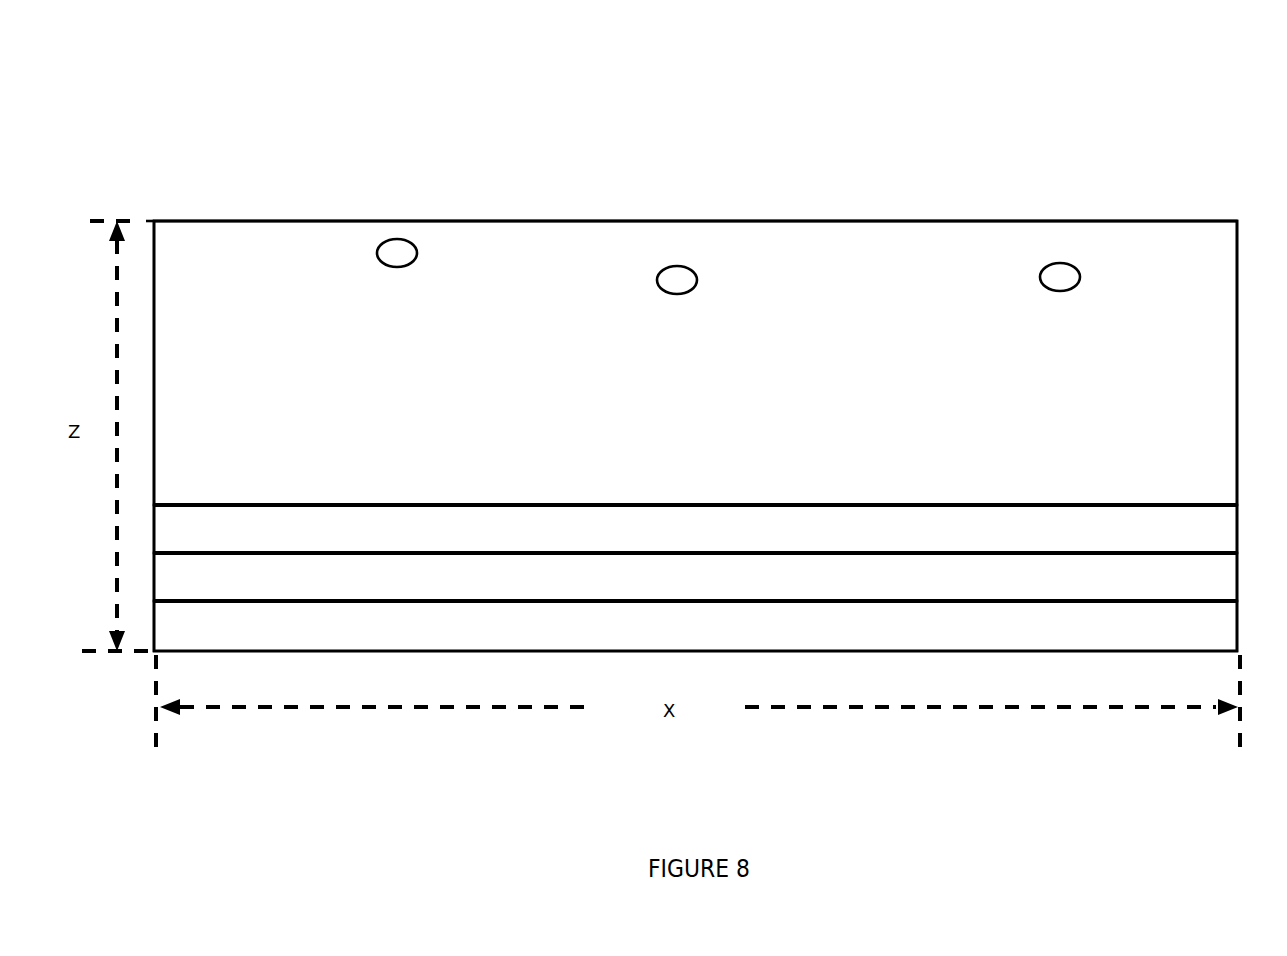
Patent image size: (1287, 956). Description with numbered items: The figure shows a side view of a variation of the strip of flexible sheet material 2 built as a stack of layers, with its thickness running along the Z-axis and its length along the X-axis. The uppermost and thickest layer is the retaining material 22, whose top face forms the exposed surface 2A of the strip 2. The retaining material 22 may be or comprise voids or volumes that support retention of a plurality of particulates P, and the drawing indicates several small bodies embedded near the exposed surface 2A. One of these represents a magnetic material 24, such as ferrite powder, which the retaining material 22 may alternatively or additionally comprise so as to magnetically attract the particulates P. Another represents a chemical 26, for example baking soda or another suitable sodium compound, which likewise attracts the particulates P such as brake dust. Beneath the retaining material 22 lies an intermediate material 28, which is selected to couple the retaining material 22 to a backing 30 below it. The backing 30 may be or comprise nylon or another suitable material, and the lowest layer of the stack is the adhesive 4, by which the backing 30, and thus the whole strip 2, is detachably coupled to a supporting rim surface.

The strip of flexible sheet material 2 is at (350, 193).
The exposed surface 2A is at (767, 221).
The retaining material 22 is at (695, 363).
The magnetic material 24 is at (413, 243).
The particulates P is at (678, 264).
The chemical 26 is at (1062, 262).
The intermediate material 28 is at (695, 529).
The backing 30 is at (695, 577).
The adhesive 4 is at (695, 626).